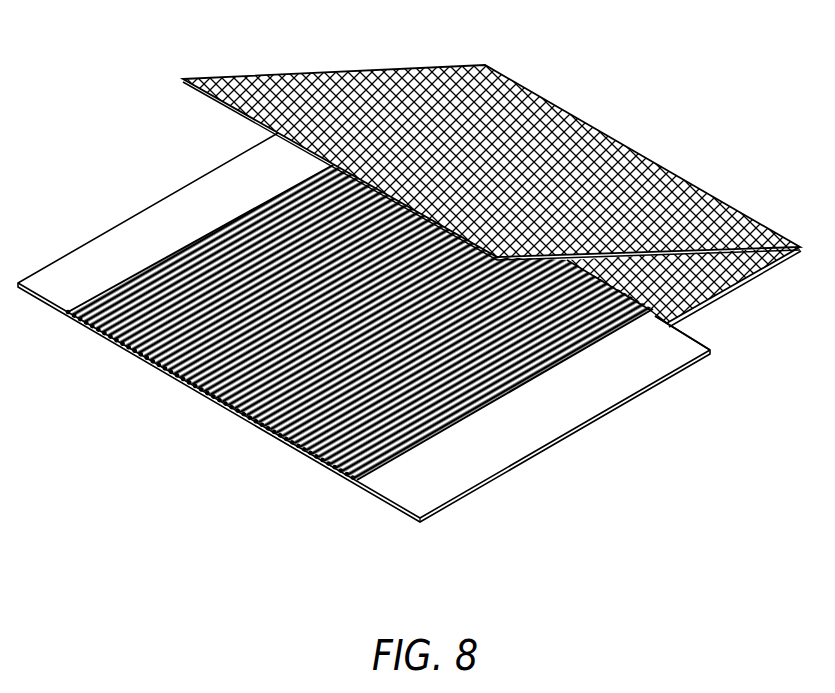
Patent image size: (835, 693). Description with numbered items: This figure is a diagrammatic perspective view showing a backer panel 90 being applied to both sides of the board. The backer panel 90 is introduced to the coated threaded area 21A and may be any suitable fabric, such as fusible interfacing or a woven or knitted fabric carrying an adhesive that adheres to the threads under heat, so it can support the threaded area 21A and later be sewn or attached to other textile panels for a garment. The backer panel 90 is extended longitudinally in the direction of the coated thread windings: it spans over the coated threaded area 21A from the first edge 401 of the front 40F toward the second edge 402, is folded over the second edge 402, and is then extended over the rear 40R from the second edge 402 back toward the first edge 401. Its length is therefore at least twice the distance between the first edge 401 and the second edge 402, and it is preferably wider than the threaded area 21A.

The backer panel 90 is at (367, 68).
The second edge 402 is at (693, 336).
The front 40F is at (553, 423).
The rear 40R is at (573, 433).
The first edge 401 is at (392, 506).
The coated threaded area 21A is at (343, 507).